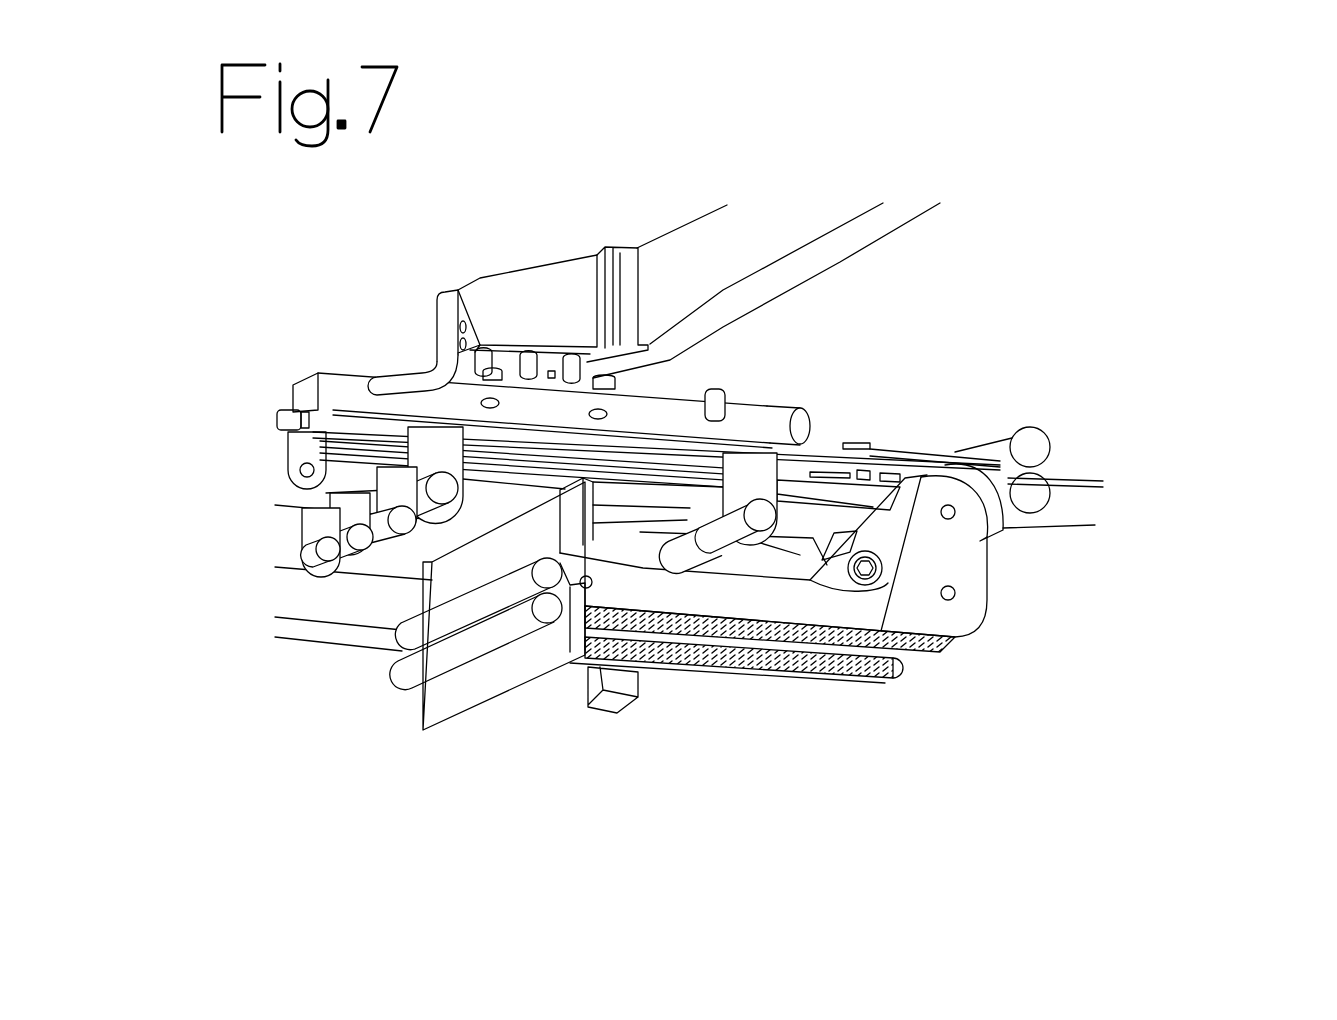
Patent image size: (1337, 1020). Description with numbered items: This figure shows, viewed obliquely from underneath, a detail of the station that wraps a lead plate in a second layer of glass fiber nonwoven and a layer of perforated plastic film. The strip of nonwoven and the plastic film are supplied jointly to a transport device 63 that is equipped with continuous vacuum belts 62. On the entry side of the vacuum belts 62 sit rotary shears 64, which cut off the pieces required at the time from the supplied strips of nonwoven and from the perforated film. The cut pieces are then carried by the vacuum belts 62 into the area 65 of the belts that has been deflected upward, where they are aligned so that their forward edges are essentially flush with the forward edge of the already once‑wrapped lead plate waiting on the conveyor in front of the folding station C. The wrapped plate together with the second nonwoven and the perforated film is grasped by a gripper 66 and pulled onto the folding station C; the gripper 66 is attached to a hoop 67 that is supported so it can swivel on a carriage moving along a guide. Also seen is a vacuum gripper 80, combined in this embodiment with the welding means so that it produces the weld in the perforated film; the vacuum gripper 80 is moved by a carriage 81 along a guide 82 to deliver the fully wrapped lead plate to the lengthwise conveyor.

The vacuum belts 62 is at (940, 637).
The transport device 63 is at (727, 712).
The rotary shears 64 is at (398, 680).
The area of the vacuum belts deflected upward 65 is at (945, 470).
The gripper 66 is at (868, 450).
The hoop 67 is at (800, 410).
The vacuum gripper 80 is at (317, 388).
The carriage 81 is at (530, 300).
The guide 82 is at (680, 268).
The folding station C is at (1170, 490).